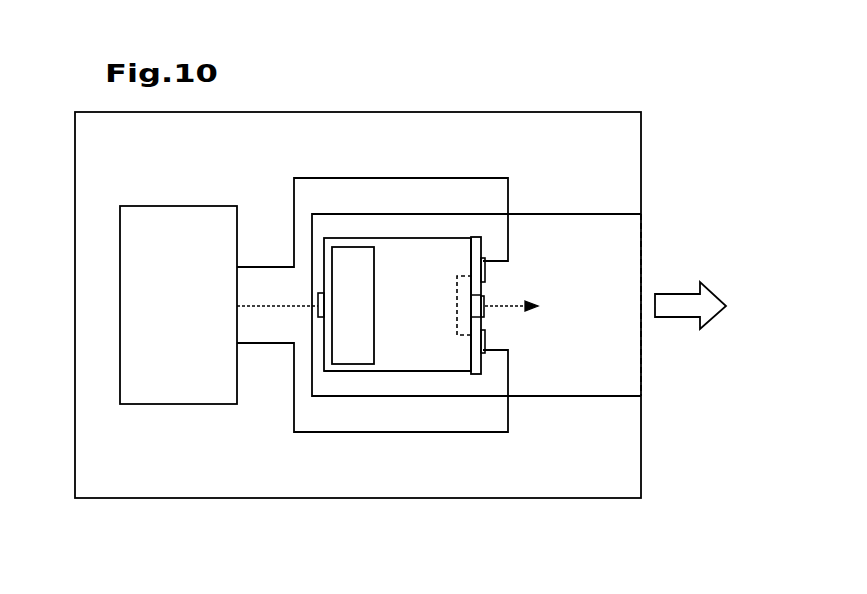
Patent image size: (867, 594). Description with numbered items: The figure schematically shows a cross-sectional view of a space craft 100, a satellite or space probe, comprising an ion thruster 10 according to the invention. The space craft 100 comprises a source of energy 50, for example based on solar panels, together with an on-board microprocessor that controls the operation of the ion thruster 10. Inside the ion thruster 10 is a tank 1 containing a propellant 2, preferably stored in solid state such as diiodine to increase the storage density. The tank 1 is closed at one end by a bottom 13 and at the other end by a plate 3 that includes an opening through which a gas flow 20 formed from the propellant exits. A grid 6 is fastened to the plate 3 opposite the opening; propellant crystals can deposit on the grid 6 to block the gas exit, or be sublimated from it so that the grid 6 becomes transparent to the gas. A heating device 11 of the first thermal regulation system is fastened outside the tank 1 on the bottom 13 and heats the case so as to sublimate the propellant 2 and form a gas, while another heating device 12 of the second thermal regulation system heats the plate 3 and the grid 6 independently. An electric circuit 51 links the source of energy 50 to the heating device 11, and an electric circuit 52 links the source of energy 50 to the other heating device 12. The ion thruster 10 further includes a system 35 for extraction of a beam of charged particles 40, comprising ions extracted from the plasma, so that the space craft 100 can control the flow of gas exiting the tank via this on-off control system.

The space craft 100 is at (75, 498).
The source of energy 50 is at (178, 305).
The electric circuit 52 is at (317, 178).
The electric circuit 51 is at (278, 297).
The ion thruster 10 is at (605, 397).
The system for extraction of a beam of charged particles 35 is at (642, 270).
The beam of charged particles 40 is at (670, 318).
The tank 1 is at (442, 238).
The bottom 13 is at (360, 372).
The propellant 2 is at (361, 312).
The plate 3 is at (476, 368).
The grid 6 is at (457, 298).
The other heating device 12 is at (485, 271).
The gas flow 20 is at (512, 303).
The heating device 11 is at (318, 308).